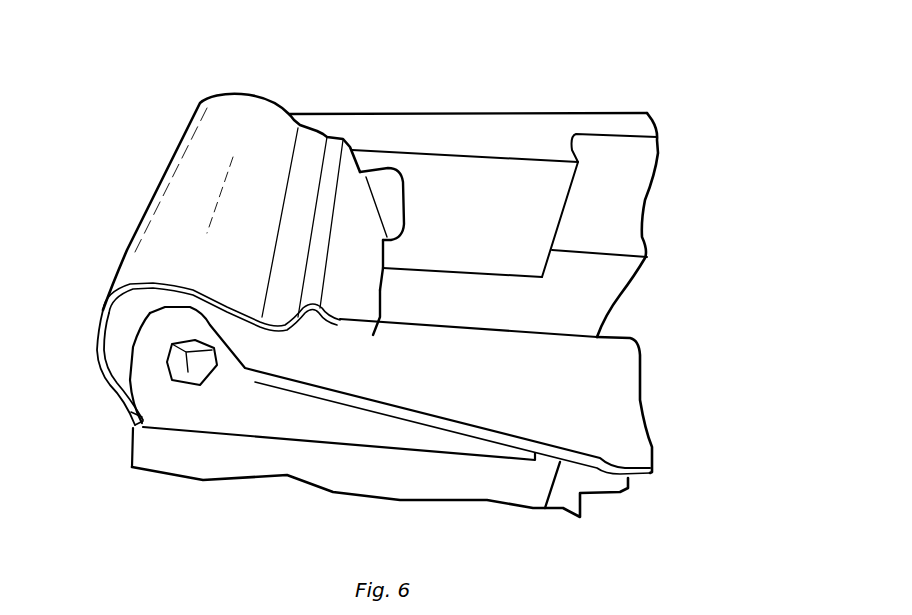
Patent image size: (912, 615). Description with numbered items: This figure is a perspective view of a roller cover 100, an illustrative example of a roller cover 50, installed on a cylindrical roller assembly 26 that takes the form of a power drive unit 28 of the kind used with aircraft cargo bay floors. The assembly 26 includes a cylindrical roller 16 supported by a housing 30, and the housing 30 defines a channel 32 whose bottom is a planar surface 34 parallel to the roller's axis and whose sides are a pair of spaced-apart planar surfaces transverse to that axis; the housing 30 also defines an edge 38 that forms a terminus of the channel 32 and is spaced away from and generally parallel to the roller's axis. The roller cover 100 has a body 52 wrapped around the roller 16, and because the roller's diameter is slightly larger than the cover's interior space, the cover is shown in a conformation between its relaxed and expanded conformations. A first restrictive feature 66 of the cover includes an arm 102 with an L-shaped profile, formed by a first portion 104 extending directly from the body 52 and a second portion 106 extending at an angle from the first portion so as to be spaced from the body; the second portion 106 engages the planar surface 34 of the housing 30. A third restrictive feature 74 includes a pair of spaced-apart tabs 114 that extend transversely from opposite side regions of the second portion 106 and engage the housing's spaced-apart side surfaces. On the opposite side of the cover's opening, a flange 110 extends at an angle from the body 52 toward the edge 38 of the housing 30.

The cylindrical roller assembly 26 is at (728, 58).
The power drive unit 28 is at (672, 50).
The housing 30 is at (525, 100).
The channel 32 is at (610, 289).
The planar surface 34 is at (536, 316).
The edge 38 is at (128, 420).
The roller cover 50 is at (162, 32).
The body 52 is at (145, 194).
The first restrictive feature 66 is at (402, 246).
The third restrictive feature 74 is at (412, 192).
The roller cover 100 is at (195, 103).
The arm 102 is at (395, 279).
The first portion 104 is at (315, 128).
The second portion 106 is at (385, 302).
The flange 110 is at (127, 407).
The tabs 114 is at (392, 184).
The cylindrical roller 16 is at (118, 333).